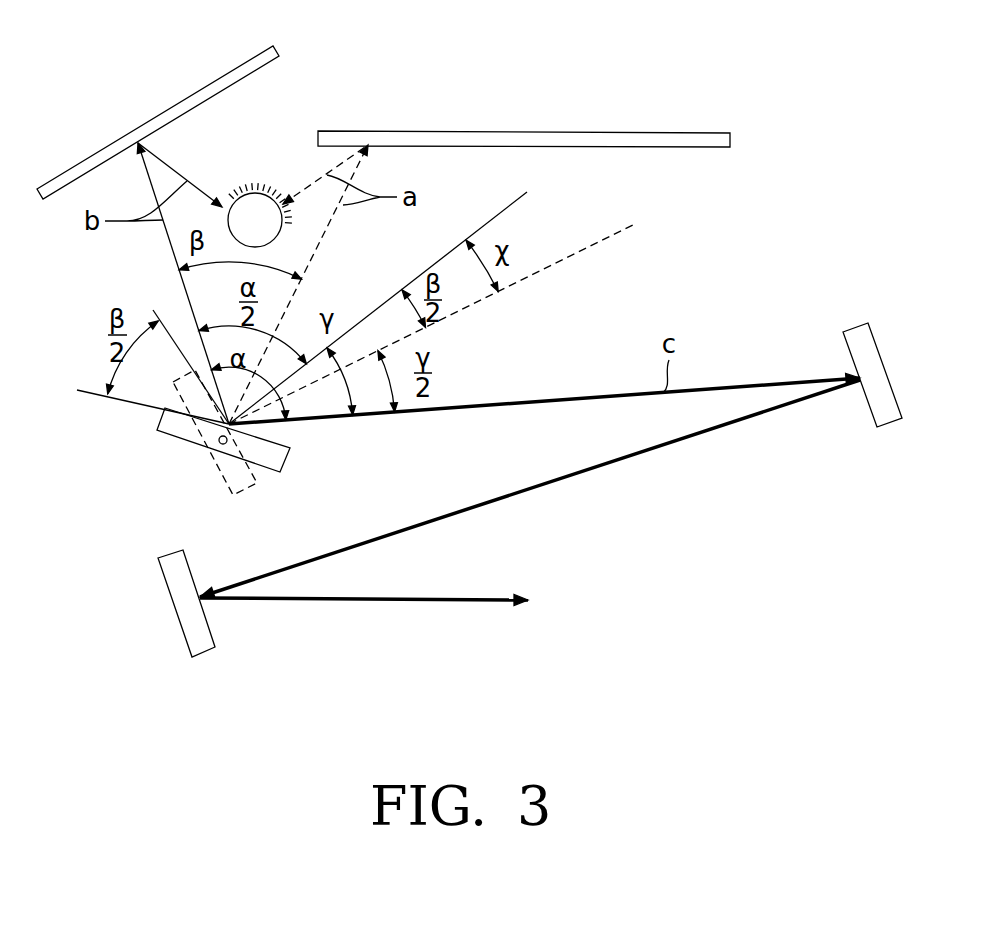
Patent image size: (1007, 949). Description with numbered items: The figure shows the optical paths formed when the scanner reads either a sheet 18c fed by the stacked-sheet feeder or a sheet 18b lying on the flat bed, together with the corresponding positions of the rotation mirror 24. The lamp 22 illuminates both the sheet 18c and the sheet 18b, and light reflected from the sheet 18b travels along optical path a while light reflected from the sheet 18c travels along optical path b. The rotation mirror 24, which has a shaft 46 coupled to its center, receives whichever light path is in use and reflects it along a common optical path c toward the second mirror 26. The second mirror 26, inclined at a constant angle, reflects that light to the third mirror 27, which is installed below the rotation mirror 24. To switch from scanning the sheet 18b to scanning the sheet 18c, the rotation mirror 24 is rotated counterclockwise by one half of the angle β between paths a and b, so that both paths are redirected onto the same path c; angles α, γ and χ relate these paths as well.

The sheet fed by the stacked-sheet feeder 18c is at (238, 76).
The sheet on the flat bed 18b is at (527, 138).
The lamp 22 is at (256, 210).
The rotation mirror 24 is at (277, 457).
The second mirror 26 is at (857, 338).
The third mirror 27 is at (183, 610).
The shaft 46 is at (217, 443).